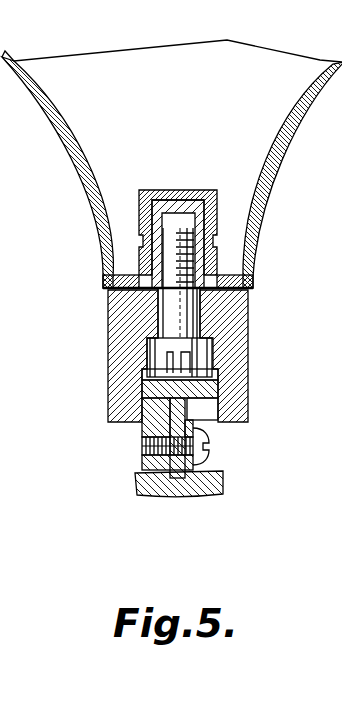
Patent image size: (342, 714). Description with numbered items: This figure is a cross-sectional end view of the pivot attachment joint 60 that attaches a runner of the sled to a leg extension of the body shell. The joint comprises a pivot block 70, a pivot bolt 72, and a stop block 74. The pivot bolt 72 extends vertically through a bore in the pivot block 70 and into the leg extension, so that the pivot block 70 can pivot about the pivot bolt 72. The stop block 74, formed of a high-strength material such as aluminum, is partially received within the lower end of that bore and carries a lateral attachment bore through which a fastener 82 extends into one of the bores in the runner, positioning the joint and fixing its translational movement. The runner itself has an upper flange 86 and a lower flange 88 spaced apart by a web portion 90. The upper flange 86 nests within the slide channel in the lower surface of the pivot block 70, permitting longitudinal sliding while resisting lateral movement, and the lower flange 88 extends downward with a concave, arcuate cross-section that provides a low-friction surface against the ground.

The pivot attachment joint 60 is at (249, 350).
The pivot block 70 is at (108, 322).
The pivot bolt 72 is at (200, 328).
The stop block 74 is at (142, 432).
The fastener 82 is at (209, 451).
The upper flange 86 is at (200, 392).
The lower flange 88 is at (223, 489).
The web portion 90 is at (168, 475).